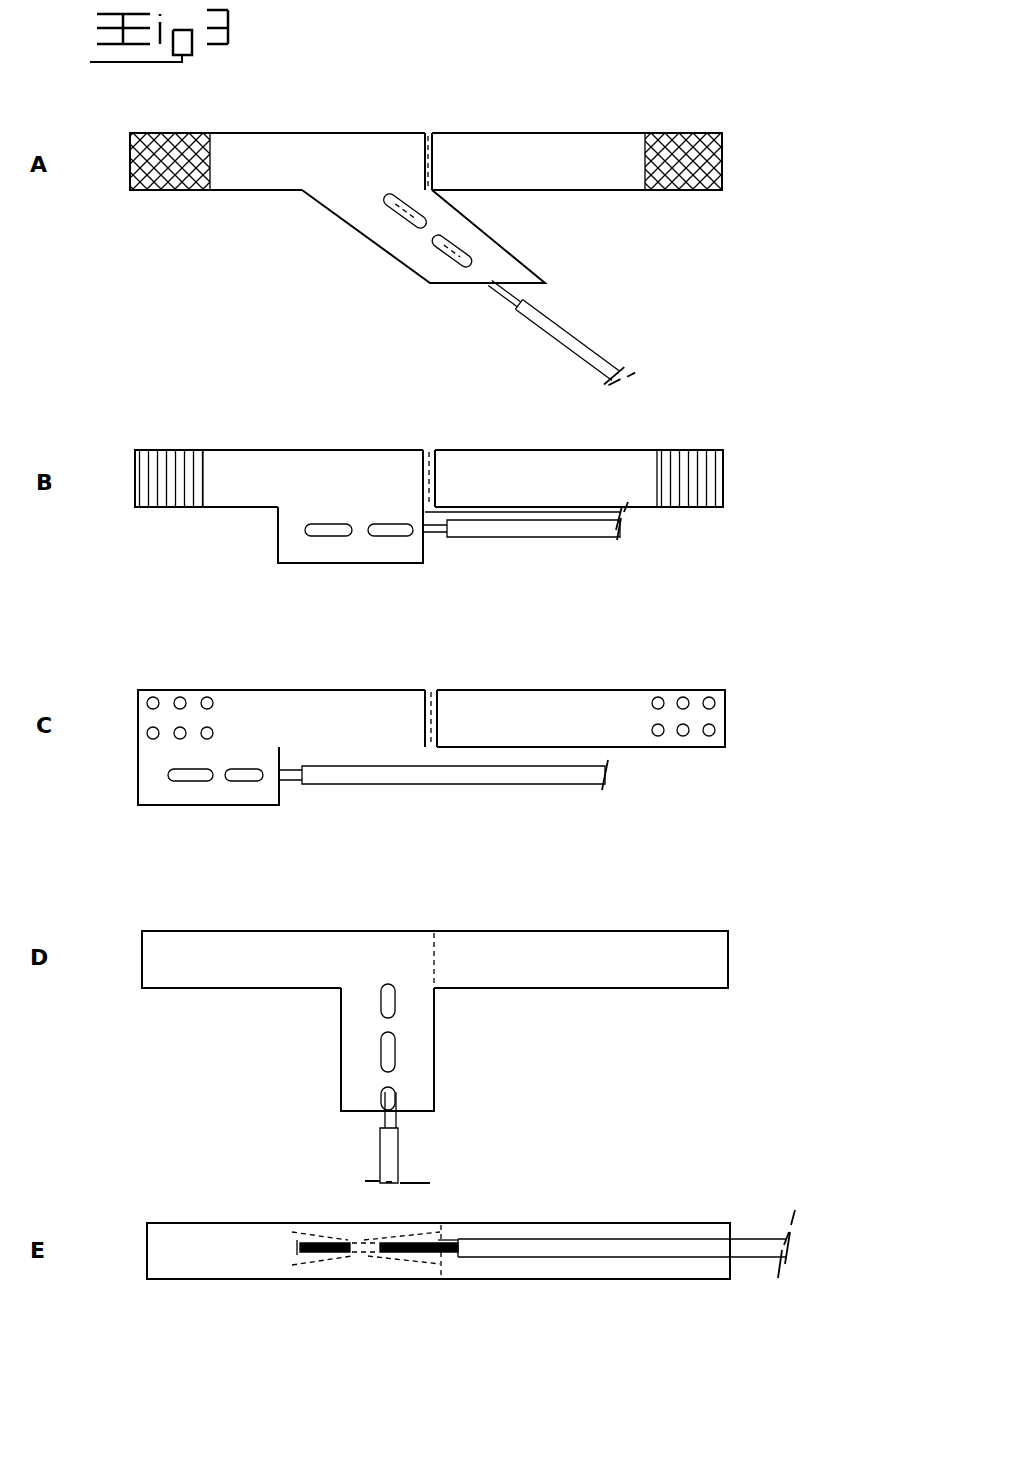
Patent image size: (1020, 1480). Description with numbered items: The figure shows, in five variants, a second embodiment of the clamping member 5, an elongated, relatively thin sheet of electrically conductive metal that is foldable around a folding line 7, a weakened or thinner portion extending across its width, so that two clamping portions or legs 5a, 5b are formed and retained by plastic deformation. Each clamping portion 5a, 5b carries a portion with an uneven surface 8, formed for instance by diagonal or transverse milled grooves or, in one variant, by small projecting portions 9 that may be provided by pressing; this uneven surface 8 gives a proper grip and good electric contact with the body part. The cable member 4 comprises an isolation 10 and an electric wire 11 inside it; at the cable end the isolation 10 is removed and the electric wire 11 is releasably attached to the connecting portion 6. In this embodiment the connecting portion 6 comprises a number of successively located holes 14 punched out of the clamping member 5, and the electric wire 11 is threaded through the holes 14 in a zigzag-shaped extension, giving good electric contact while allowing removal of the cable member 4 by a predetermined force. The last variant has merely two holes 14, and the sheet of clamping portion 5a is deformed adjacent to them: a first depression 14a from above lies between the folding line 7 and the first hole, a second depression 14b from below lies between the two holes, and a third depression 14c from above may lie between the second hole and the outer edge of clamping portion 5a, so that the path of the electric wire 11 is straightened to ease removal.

The cable member 4 is at (634, 317).
The clamping member 5 is at (506, 104).
The clamping portion 5a is at (238, 143).
The clamping portion 5b is at (588, 150).
The connecting portion 6 is at (365, 235).
The folding line 7 is at (428, 133).
The uneven surface 8 is at (172, 190).
The projecting portions 9 is at (207, 705).
The isolation 10 is at (565, 337).
The electric wire 11 is at (510, 293).
The holes 14 is at (447, 240).
The first depression 14a is at (428, 1240).
The second depression 14b is at (362, 1256).
The third depression 14c is at (300, 1240).